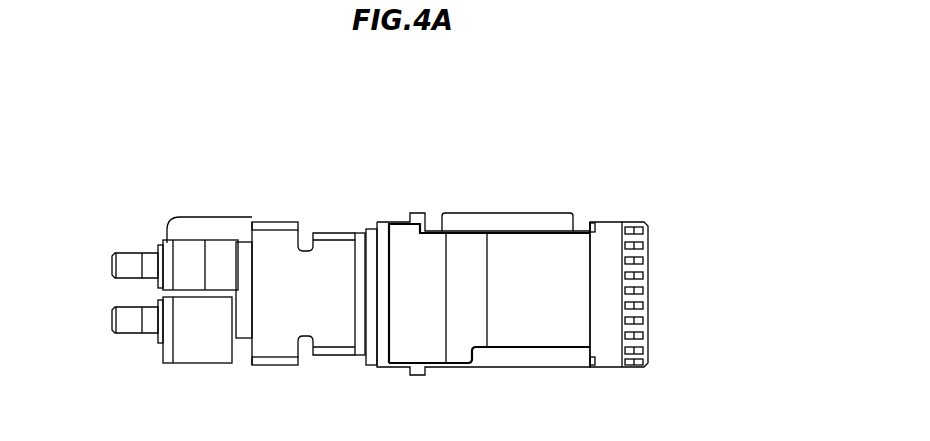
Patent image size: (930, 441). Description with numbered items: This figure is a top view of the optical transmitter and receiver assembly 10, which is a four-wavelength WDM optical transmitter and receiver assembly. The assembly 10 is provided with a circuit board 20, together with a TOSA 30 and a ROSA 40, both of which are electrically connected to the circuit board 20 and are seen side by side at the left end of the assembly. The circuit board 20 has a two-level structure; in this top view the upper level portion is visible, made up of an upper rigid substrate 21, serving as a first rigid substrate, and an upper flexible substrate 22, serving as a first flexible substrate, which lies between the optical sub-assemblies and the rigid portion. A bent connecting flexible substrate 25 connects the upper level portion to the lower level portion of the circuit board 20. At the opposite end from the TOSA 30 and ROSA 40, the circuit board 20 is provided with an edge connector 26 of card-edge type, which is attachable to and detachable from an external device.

The optical transmitter and receiver assembly 10 is at (515, 120).
The circuit board 20 is at (522, 253).
The upper rigid substrate 21 is at (537, 328).
The upper flexible substrate 22 is at (283, 258).
The connecting flexible substrate 25 is at (542, 225).
The edge connector 26 is at (637, 317).
The TOSA 30 is at (148, 258).
The ROSA 40 is at (150, 328).